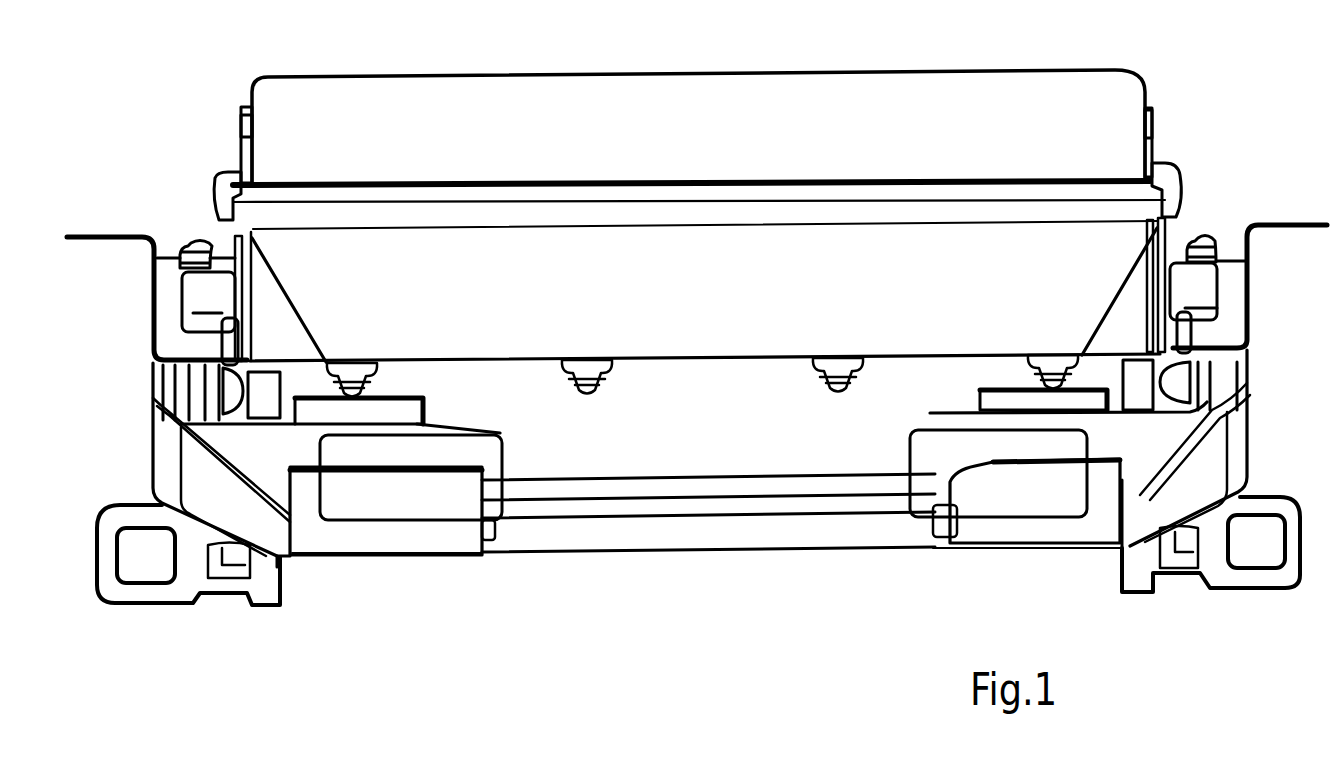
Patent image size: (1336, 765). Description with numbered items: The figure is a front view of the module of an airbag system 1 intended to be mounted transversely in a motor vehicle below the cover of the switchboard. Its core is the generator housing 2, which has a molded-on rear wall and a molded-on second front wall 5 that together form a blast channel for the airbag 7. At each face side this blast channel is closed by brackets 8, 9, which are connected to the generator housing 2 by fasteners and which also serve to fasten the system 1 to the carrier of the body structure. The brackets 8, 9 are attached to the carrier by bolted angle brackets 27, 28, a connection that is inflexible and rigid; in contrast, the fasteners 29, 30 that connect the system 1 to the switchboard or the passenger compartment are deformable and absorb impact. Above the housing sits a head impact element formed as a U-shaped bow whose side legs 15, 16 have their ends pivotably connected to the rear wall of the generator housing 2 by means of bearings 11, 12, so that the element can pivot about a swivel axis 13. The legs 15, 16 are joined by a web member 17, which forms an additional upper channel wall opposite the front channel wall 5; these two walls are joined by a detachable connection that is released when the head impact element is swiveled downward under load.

The airbag system 1 is at (695, 346).
The generator housing 2 is at (694, 516).
The second front wall 5 is at (803, 453).
The airbag 7 is at (846, 95).
The bracket 8 is at (250, 108).
The bracket 9 is at (1148, 108).
The bearing 11 is at (213, 185).
The bearing 12 is at (1182, 180).
The swivel axis 13 is at (413, 200).
The side leg 15 is at (240, 137).
The side leg 16 is at (1158, 167).
The web member 17 is at (677, 307).
The angle bracket 27 is at (117, 593).
The angle bracket 28 is at (1267, 593).
The fastener 29 is at (87, 247).
The fastener 30 is at (1310, 233).